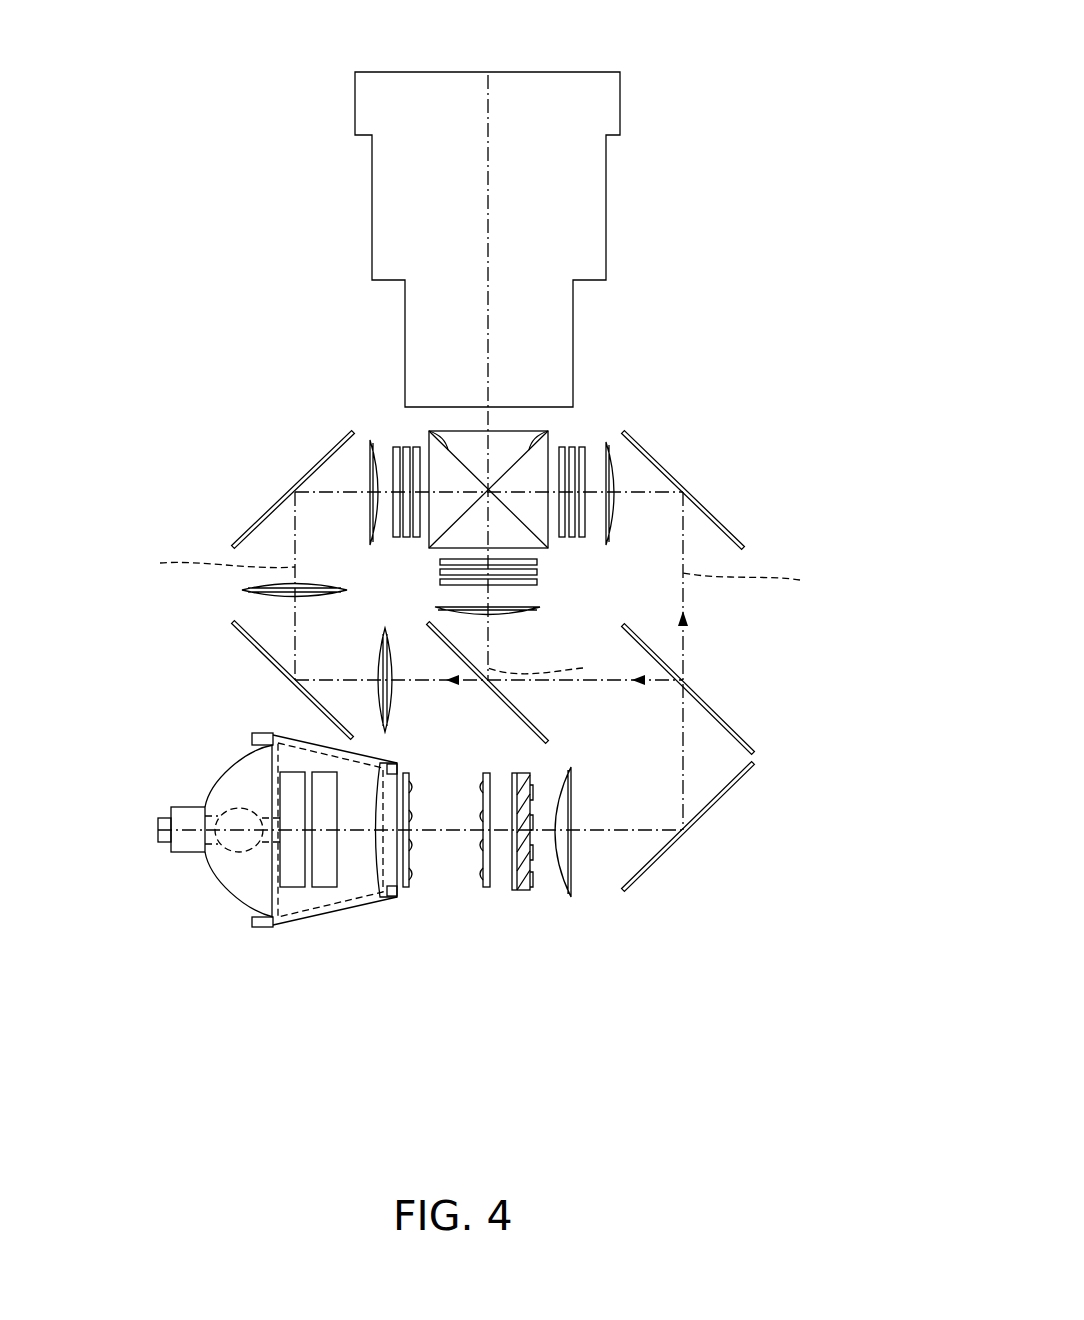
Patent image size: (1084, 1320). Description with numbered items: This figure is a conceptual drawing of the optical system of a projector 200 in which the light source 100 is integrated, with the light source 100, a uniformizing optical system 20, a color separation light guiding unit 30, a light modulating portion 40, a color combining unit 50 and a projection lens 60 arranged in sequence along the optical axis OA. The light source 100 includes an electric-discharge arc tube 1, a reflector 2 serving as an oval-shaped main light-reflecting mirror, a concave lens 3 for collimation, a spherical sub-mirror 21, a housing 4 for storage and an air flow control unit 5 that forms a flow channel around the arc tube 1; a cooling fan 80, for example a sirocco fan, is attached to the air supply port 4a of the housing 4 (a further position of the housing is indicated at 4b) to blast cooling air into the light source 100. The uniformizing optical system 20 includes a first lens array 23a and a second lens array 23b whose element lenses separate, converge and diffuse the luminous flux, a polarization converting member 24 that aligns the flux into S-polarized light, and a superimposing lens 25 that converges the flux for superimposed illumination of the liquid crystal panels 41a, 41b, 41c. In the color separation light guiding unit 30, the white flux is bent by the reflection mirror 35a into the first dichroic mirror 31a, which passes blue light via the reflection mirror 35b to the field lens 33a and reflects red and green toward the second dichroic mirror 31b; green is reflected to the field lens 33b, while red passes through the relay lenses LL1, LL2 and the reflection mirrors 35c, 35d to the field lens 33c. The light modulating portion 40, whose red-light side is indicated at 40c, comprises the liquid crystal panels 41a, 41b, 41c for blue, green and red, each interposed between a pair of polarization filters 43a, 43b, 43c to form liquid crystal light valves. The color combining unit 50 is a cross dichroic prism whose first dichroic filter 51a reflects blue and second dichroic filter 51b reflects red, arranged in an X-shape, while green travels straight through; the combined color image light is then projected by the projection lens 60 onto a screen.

The projector 200 is at (862, 26).
The projection lens 60 is at (550, 238).
The color combining unit 50 is at (472, 429).
The first dichroic filter 51a is at (440, 437).
The second dichroic filter 51b is at (540, 435).
The light modulating portion 40 is at (497, 491).
The light modulation device for red light 40c is at (321, 497).
The liquid crystal panel 41a is at (577, 520).
The liquid crystal panel 41b is at (540, 575).
The liquid crystal panel 41c is at (400, 482).
The polarization filters 43a is at (583, 538).
The polarization filters 43b is at (440, 563).
The polarization filters 43c is at (416, 538).
The color separation light guiding unit 30 is at (479, 682).
The first dichroic mirror 31a is at (720, 715).
The second dichroic mirror 31b is at (535, 718).
The field lens 33a is at (620, 470).
The field lens 33b is at (525, 620).
The field lens 33c is at (367, 515).
The reflection mirror 35a is at (655, 870).
The reflection mirror 35b is at (735, 530).
The reflection mirror 35c is at (265, 660).
The reflection mirror 35d is at (253, 525).
The relay lens LL1 is at (394, 705).
The relay lens LL2 is at (243, 590).
The uniformizing optical system 20 is at (420, 913).
The optical axis OA is at (440, 838).
The first lens array 23a is at (410, 778).
The second lens array 23b is at (487, 890).
The polarization converting member 24 is at (521, 892).
The superimposing lens 25 is at (566, 897).
The light source 100 is at (254, 877).
The arc tube 1 is at (210, 859).
The reflector 2 is at (250, 905).
The sub-mirror 21 is at (262, 808).
The air flow control unit 5 is at (192, 860).
The cooling fan 80 is at (378, 922).
The housing 4 is at (307, 885).
The air supply port 4a is at (281, 888).
The second light transmitting plate 4b is at (325, 888).
The concave lens 3 is at (396, 905).